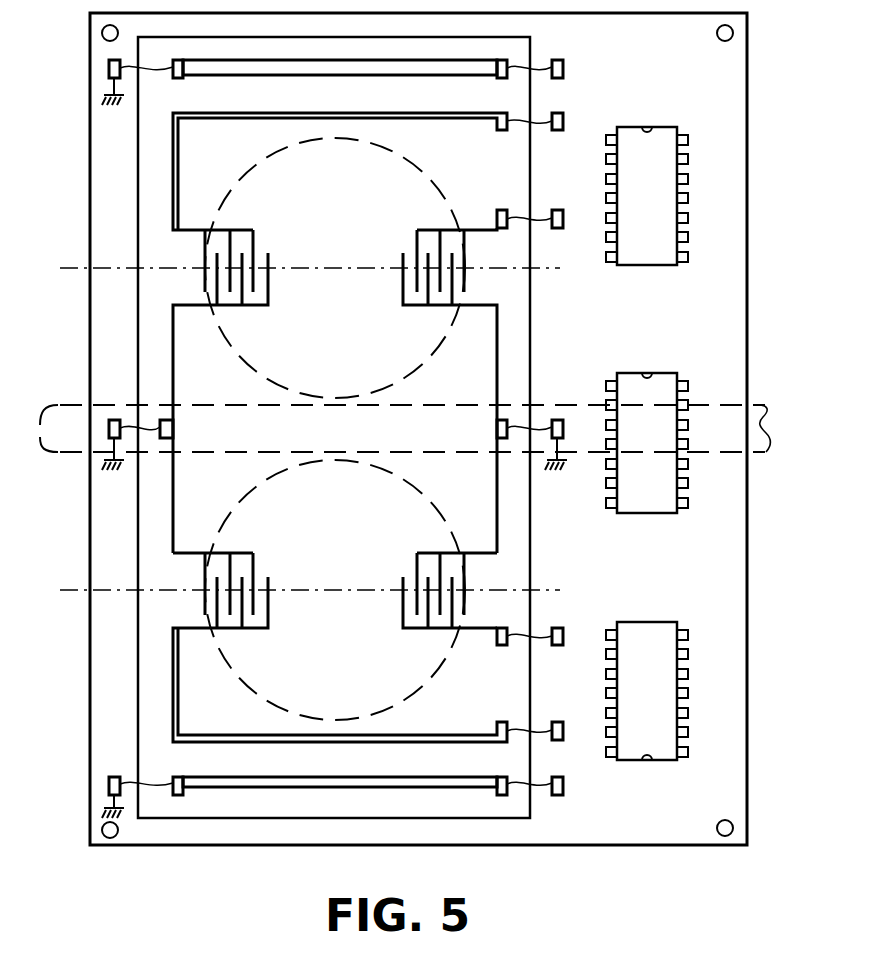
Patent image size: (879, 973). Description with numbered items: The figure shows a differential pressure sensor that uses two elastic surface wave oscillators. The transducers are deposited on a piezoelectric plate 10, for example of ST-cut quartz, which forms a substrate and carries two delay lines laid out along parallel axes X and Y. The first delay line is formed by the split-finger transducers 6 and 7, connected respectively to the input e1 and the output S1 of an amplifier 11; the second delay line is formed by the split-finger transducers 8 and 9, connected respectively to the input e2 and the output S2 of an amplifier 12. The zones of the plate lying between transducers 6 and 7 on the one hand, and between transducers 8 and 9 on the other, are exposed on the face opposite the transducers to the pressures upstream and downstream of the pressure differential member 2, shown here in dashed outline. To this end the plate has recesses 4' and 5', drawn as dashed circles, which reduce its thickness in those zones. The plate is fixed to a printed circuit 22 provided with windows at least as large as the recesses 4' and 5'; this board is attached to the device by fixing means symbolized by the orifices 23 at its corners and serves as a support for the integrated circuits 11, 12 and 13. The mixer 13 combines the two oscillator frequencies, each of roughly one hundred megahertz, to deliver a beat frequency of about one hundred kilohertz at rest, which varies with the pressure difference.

The pressure differential member 2 is at (76, 440).
The recess 4' is at (340, 202).
The recess 5' is at (340, 659).
The split-finger transducer 6 is at (212, 306).
The split-finger transducer 7 is at (462, 306).
The split-finger transducer 8 is at (212, 630).
The split-finger transducer 9 is at (462, 630).
The piezoelectric plate 10 is at (218, 808).
The amplifier 11 is at (634, 266).
The amplifier 12 is at (630, 761).
The mixer 13 is at (630, 514).
The printed circuit 22 is at (592, 828).
The orifices 23 is at (102, 831).
The input e1 is at (503, 113).
The input e2 is at (503, 740).
The output S1 is at (505, 230).
The output S2 is at (505, 645).
The axis X is at (309, 253).
The axis Y is at (308, 576).